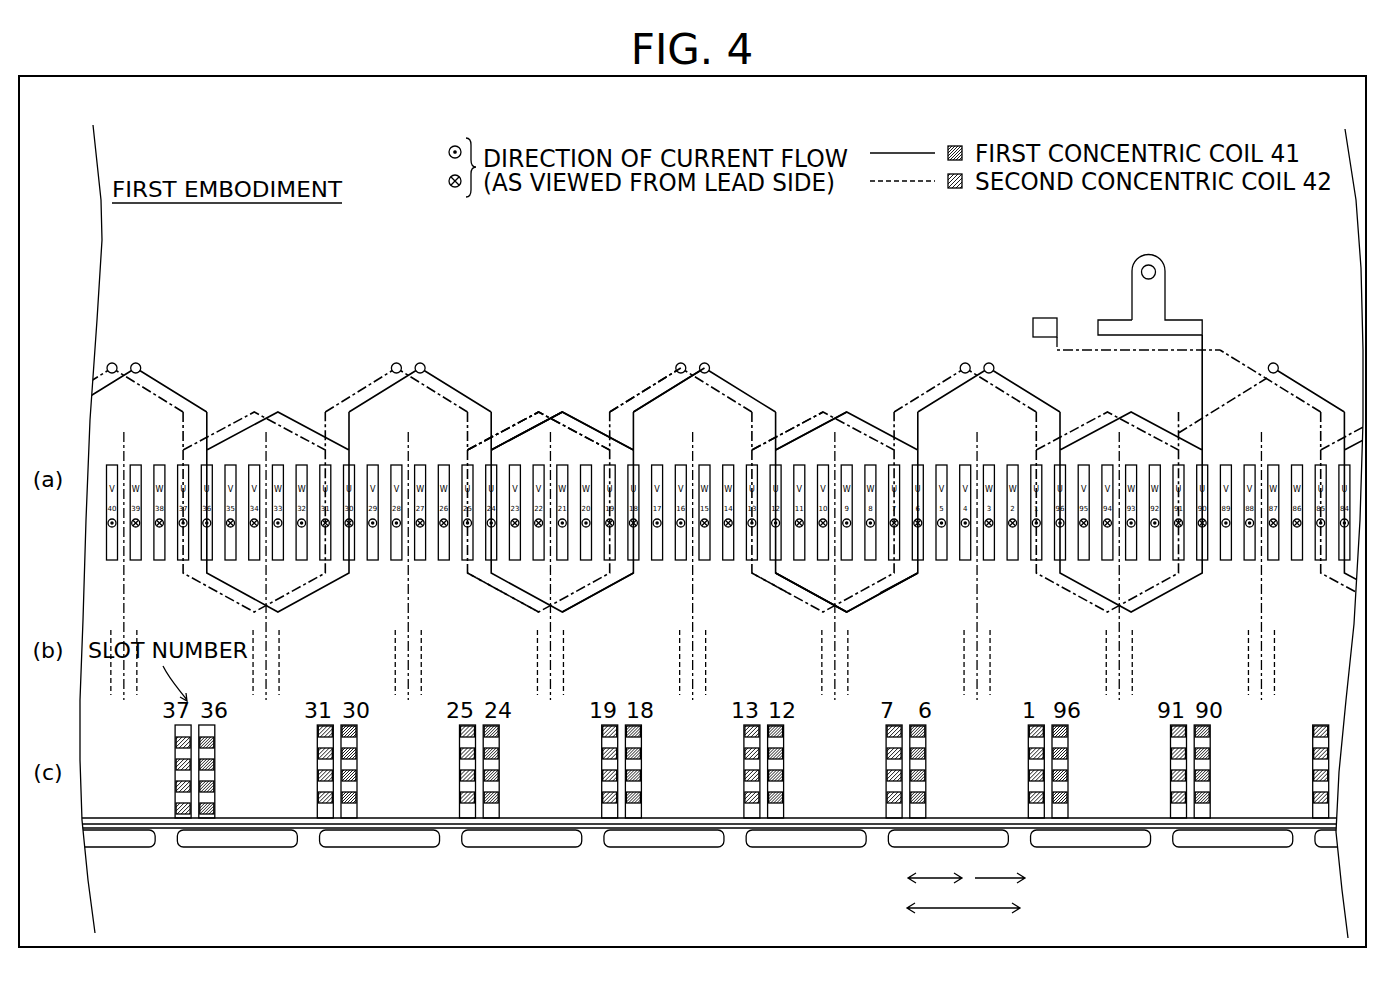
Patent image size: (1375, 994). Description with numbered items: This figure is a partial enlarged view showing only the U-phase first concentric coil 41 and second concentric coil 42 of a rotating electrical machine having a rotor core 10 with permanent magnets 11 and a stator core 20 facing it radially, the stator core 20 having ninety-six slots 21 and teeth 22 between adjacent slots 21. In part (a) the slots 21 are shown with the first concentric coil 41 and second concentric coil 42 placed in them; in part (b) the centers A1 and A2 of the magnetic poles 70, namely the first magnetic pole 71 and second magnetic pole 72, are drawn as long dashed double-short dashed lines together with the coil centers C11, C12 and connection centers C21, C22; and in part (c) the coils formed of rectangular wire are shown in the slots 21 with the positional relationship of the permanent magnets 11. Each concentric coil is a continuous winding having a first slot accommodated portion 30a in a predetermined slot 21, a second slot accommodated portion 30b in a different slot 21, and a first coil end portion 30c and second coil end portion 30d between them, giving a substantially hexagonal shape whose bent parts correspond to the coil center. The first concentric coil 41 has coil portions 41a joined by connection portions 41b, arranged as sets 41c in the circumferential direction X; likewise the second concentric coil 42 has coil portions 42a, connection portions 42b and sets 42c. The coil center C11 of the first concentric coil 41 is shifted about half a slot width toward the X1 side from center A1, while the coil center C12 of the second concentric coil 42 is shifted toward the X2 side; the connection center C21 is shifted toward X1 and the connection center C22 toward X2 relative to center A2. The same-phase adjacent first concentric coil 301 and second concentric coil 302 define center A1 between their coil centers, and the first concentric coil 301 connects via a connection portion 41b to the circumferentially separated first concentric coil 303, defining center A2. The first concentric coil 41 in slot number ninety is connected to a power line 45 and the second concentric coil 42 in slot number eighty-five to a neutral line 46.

The rotor core 10 is at (705, 872).
The permanent magnets 11 is at (557, 849).
The stator core 20 is at (118, 803).
The slots 21 is at (188, 775).
The teeth 22 is at (198, 818).
The first slot accommodated portion 30a is at (920, 578).
The second slot accommodated portion 30b is at (767, 572).
The first coil end portion 30c is at (843, 414).
The second coil end portion 30d is at (848, 612).
The first concentric coil 301 is at (622, 582).
The second concentric coil 302 is at (512, 598).
The first concentric coil 303 is at (809, 597).
The first concentric coil 41 is at (720, 459).
The coil portions 41a is at (532, 428).
The connection portions 41b is at (672, 386).
The sets 41c is at (677, 323).
The second concentric coil 42 is at (703, 458).
The coil portions 42a is at (639, 397).
The connection portions 42b is at (636, 383).
The sets 42c is at (545, 382).
The power line 45 is at (1157, 308).
The neutral line 46 is at (1036, 326).
The magnetic poles 70 is at (125, 446).
The first magnetic pole 71 is at (553, 447).
The second magnetic pole 72 is at (693, 447).
The coil center C11 is at (565, 678).
The coil center C12 is at (537, 678).
The connection center C21 is at (706, 646).
The connection center C22 is at (679, 648).
The circumferential direction X is at (963, 920).
The one side in the circumferential direction X1 is at (1000, 889).
The other side in the circumferential direction X2 is at (935, 889).